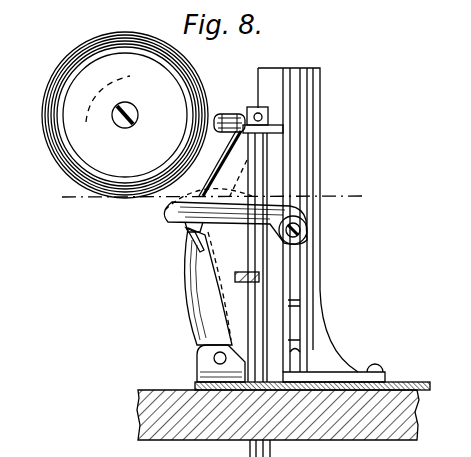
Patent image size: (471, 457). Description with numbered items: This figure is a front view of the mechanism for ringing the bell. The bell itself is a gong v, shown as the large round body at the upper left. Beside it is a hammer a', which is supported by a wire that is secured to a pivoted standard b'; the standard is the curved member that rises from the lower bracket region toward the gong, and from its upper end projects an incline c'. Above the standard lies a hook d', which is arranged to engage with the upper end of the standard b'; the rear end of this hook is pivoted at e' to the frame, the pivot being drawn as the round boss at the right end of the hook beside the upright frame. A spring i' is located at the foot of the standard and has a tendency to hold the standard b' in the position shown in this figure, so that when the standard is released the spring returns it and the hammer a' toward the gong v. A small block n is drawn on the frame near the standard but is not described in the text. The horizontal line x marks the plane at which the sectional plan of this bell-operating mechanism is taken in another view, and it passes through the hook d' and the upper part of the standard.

The gong v is at (178, 104).
The hammer a' is at (248, 104).
The section line x is at (206, 195).
The hook d' is at (220, 223).
The pivot e' is at (321, 225).
The projecting incline c' is at (166, 245).
The pivoted standard b' is at (192, 286).
The stop block n is at (256, 240).
The spring i' is at (201, 363).